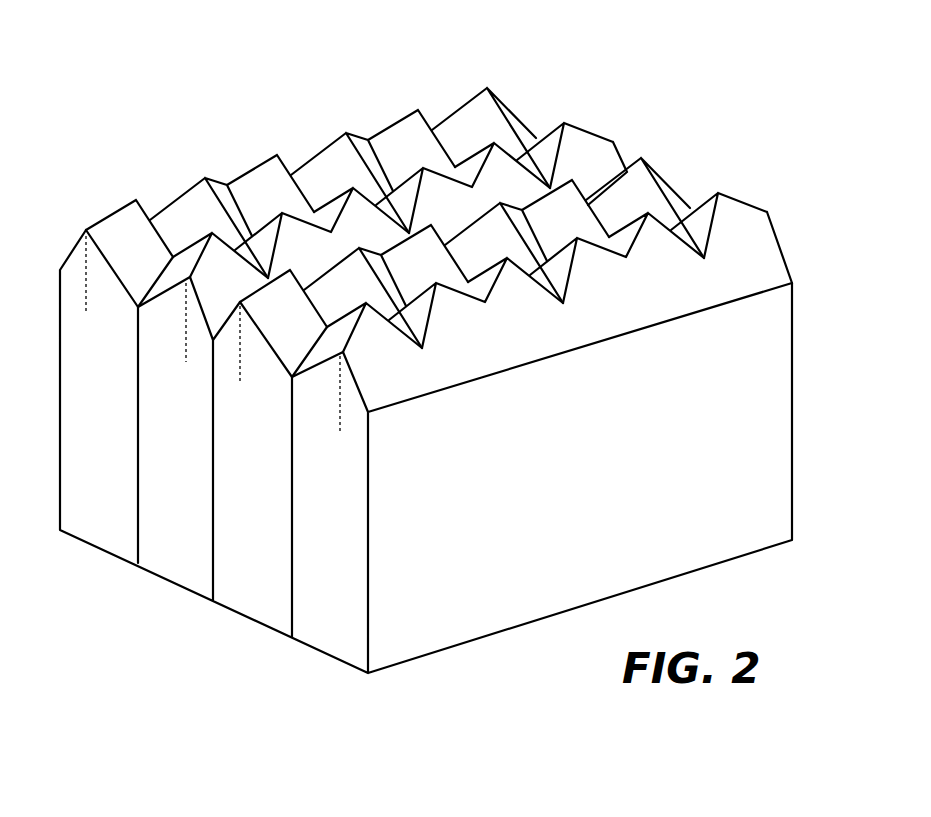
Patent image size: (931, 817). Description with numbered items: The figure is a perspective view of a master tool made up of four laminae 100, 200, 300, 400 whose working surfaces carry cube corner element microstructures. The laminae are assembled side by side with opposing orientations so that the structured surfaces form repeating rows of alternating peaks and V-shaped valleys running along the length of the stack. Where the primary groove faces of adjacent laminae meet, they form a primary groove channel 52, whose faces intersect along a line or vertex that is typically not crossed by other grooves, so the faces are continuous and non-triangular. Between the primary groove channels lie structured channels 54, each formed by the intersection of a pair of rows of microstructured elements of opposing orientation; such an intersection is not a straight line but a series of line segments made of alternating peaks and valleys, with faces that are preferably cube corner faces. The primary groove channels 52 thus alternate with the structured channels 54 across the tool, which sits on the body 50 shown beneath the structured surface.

The substrate block 50 is at (752, 267).
The primary groove channel 52 is at (240, 384).
The channel 54 is at (186, 362).
The lamina 100 is at (540, 103).
The lamina 200 is at (607, 135).
The lamina 300 is at (684, 170).
The lamina 400 is at (778, 208).